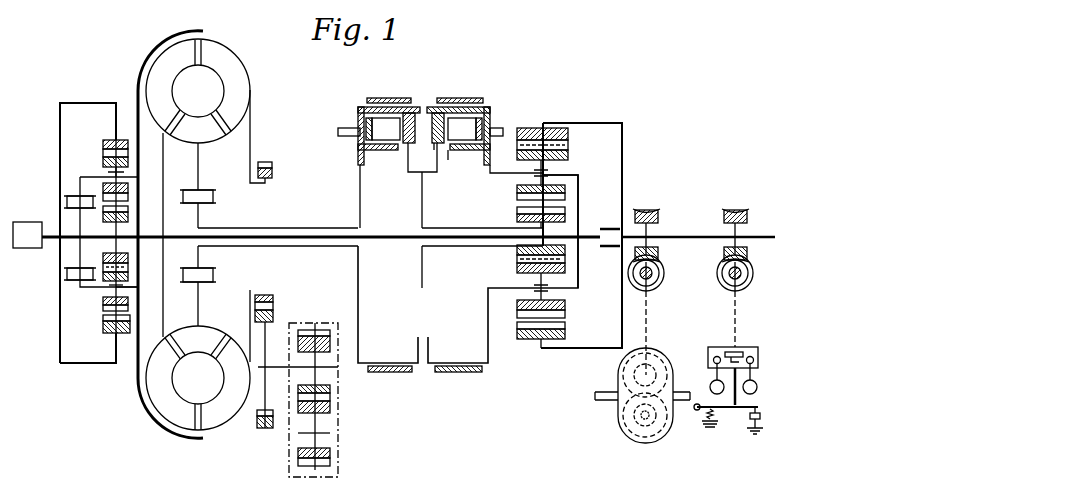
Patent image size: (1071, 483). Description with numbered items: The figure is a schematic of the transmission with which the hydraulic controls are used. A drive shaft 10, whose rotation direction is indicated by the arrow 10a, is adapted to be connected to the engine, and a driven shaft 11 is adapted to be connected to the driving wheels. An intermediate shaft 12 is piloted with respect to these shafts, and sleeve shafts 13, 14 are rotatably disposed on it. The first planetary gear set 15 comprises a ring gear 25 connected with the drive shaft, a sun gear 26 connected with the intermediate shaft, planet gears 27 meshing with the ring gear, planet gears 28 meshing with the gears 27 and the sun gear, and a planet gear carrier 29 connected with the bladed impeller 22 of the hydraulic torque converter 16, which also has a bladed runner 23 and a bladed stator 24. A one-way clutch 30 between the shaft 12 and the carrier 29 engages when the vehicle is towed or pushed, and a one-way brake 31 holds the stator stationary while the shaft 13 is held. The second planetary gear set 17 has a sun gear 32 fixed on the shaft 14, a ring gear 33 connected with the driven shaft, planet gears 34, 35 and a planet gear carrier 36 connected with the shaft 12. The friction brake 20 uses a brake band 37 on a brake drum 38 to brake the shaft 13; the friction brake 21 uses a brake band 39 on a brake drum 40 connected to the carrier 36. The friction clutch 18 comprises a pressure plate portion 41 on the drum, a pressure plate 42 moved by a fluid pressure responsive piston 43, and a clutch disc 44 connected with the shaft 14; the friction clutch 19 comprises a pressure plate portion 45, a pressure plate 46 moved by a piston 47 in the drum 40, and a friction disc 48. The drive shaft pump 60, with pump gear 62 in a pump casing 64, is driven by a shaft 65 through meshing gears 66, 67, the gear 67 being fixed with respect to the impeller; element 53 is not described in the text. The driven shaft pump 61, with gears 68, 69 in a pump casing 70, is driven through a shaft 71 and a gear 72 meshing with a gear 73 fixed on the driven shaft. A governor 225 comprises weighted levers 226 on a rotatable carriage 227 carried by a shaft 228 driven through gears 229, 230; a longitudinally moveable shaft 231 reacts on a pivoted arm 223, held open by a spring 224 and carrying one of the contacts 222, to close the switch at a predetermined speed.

The drive shaft 10 is at (30, 248).
The arrow 10a is at (34, 226).
The driven shaft 11 is at (687, 235).
The intermediate shaft 12 is at (178, 235).
The sleeve shaft 13 is at (302, 228).
The sleeve shaft 14 is at (458, 247).
The planetary gear set 15 is at (120, 138).
The hydraulic torque converter 16 is at (212, 82).
The second planetary gear set 17 is at (551, 118).
The friction clutch 18 is at (400, 152).
The friction clutch 19 is at (448, 154).
The friction brake 20 is at (379, 173).
The friction brake 21 is at (481, 124).
The bladed impeller 22 is at (240, 76).
The bladed runner 23 is at (172, 50).
The bladed stator 24 is at (202, 108).
The ring gear 25 is at (106, 150).
The sun gear 26 is at (128, 268).
The planet gears 27 is at (128, 190).
The planet gears 28 is at (103, 302).
The planet gear carrier 29 is at (140, 287).
The one-way clutch 30 is at (78, 206).
The one-way brake 31 is at (214, 200).
The sun gear 32 is at (517, 222).
The ring gear 33 is at (568, 135).
The planet gears 34 is at (568, 150).
The planet gears 35 is at (563, 310).
The planet gear carrier 36 is at (578, 176).
The brake band 37 is at (367, 98).
The brake drum 38 is at (358, 110).
The brake band 39 is at (476, 98).
The brake drum 40 is at (490, 110).
The pressure plate portion 41 is at (416, 152).
The pressure plate 42 is at (356, 134).
The fluid pressure responsive piston 43 is at (364, 122).
The clutch disc 44 is at (410, 112).
The pressure plate portion 45 is at (438, 112).
The pressure plate 46 is at (484, 146).
The fluid pressure responsive piston 47 is at (496, 130).
The friction disc 48 is at (438, 142).
The clutch 53 is at (330, 462).
The drive shaft pump 60 is at (301, 385).
The driven shaft pump 61 is at (639, 410).
The pump gear 62 is at (330, 326).
The pump casing 64 is at (338, 430).
The shaft 65 is at (330, 368).
The gear 66 is at (273, 318).
The gear 67 is at (273, 298).
The pump gear 68 is at (620, 373).
The pump gear 69 is at (664, 437).
The pump casing 70 is at (620, 416).
The shaft 71 is at (648, 300).
The gear 72 is at (664, 273).
The gear 73 is at (646, 209).
The contacts 222 is at (748, 424).
The pivoted arm 223 is at (762, 399).
The spring 224 is at (708, 421).
The governor 225 is at (717, 357).
The weighted levers 226 is at (710, 386).
The rotatable carriage 227 is at (718, 347).
The shaft 228 is at (734, 302).
The gear 229 is at (751, 270).
The gear 230 is at (741, 210).
The longitudinally moveable shaft 231 is at (713, 362).